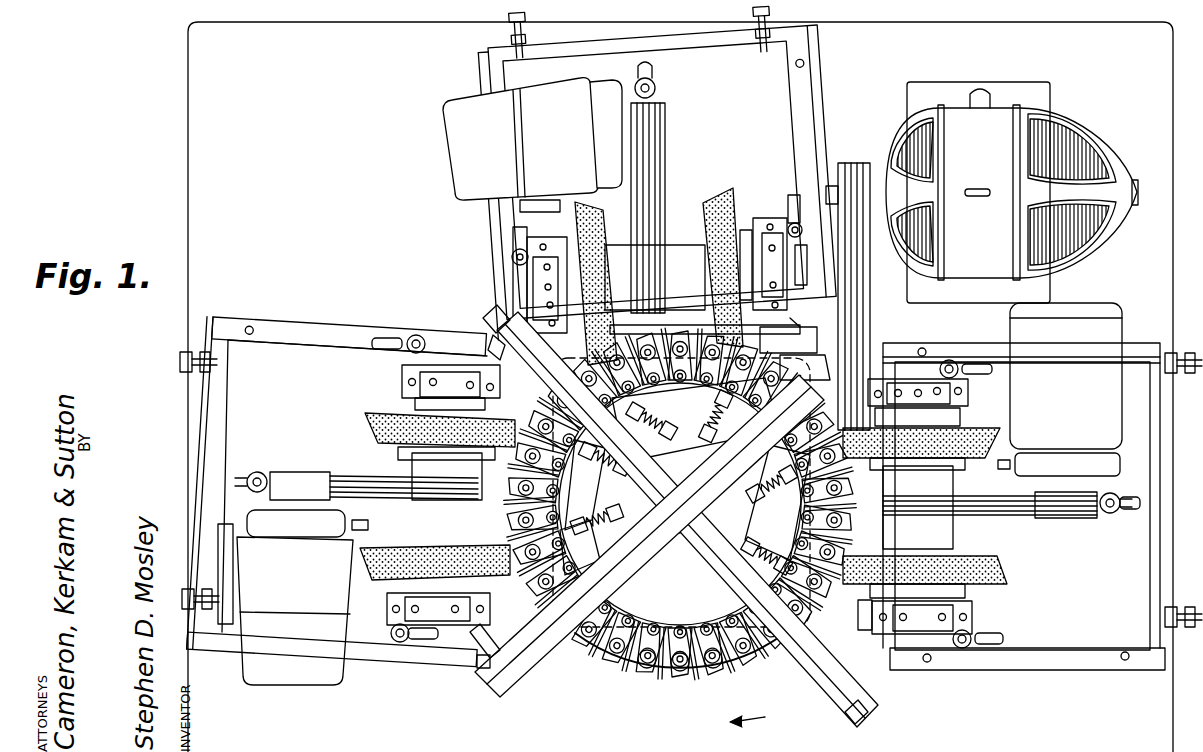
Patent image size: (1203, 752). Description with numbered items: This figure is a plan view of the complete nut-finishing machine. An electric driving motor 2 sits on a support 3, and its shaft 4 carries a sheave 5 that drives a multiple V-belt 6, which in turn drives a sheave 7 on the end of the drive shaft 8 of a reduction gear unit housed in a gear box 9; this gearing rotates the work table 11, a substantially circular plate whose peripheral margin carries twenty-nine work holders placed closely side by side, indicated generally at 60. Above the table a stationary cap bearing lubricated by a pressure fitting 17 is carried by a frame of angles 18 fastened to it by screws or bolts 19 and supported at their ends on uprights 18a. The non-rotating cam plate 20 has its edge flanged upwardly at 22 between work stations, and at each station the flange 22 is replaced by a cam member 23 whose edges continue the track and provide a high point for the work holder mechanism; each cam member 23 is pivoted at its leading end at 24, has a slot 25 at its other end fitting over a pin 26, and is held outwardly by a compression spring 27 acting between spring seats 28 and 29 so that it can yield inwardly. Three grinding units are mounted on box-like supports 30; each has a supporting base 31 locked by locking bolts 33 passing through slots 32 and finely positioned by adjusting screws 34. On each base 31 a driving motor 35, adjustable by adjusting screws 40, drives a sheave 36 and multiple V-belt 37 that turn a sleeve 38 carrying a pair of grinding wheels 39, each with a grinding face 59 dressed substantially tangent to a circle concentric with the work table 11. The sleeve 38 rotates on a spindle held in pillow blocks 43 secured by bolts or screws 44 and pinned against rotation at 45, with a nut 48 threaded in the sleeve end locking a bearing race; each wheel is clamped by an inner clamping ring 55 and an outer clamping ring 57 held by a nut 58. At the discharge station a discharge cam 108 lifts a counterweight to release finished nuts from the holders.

The electric driving motor 2 is at (1120, 176).
The support 3 is at (925, 97).
The shaft 4 is at (830, 186).
The sheave 5 is at (858, 250).
The multiple V-belt 6 is at (862, 290).
The sheave 7 is at (862, 268).
The drive shaft 8 is at (658, 182).
The gear box 9 is at (806, 375).
The work table 11 is at (665, 665).
The pressure fitting 17 is at (708, 510).
The angles 18 is at (705, 540).
The uprights 18a is at (508, 350).
The screws or bolts 19 is at (700, 492).
The cam plate 20 is at (610, 672).
The flange 22 is at (650, 635).
The cam member 23 is at (700, 405).
The pivot 24 is at (658, 421).
The slot 25 is at (728, 430).
The pin 26 is at (765, 477).
The compression spring 27 is at (762, 485).
The spring seat 28 is at (677, 483).
The spring seat 29 is at (775, 560).
The box-like support 30 is at (1090, 660).
The supporting base 31 is at (1010, 660).
The slot 32 is at (975, 364).
The locking bolt 33 is at (948, 360).
The adjusting screw 34 is at (1148, 360).
The driving motor 35 is at (470, 173).
The sheave 36 is at (660, 120).
The multiple V-belt 37 is at (662, 168).
The sleeve 38 is at (690, 250).
The grinding wheel 39 is at (998, 588).
The adjusting screw 40 is at (372, 520).
The pillow block 43 is at (533, 250).
The bolts or screws 44 is at (543, 247).
The pin 45 is at (545, 285).
The nut 48 is at (760, 235).
The inner clamping ring 55 is at (705, 321).
The outer clamping ring 57 is at (745, 230).
The nut 58 is at (756, 236).
The grinding face 59 is at (713, 212).
The work holders 60 is at (705, 672).
The discharge cam 108 is at (850, 615).